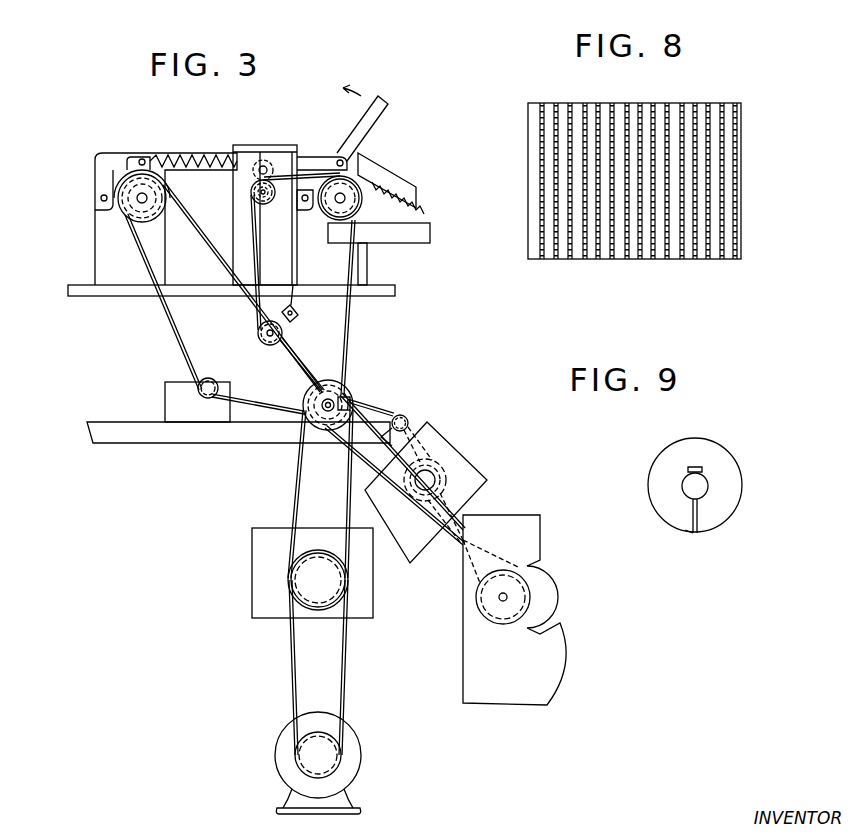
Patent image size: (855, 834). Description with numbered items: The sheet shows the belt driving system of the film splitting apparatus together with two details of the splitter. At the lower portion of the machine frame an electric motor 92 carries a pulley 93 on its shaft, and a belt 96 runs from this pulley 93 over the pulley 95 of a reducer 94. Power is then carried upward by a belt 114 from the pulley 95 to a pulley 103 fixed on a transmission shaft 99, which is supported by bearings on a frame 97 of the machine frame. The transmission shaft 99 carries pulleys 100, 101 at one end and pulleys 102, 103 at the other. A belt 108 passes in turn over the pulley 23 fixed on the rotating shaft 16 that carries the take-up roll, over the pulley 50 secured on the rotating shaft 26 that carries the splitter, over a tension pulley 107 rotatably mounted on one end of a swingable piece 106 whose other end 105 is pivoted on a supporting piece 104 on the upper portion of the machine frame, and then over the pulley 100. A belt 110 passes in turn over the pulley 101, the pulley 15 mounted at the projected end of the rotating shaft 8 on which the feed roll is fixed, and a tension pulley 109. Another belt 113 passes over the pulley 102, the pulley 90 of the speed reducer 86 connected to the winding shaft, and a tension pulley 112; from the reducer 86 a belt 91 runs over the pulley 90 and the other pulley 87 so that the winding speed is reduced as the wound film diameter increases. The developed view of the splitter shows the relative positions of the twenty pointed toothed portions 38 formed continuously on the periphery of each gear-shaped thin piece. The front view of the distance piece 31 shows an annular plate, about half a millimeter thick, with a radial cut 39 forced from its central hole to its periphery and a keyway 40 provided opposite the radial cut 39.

In FIG. 3, the rotating shaft 8 is at (138, 196).
In FIG. 3, the pulley 15 is at (122, 215).
In FIG. 3, the rotating shaft 16 is at (387, 180).
In FIG. 3, the pulley 23 is at (363, 228).
In FIG. 3, the rotating shaft 26 is at (258, 183).
In FIG. 3, the pulley 50 is at (252, 197).
In FIG. 3, the transmission shaft 99 is at (333, 398).
In FIG. 3, the pulley 100 is at (352, 383).
In FIG. 3, the pulley 101 is at (302, 390).
In FIG. 3, the pulley 102 is at (350, 373).
In FIG. 3, the pulley 103 is at (285, 427).
In FIG. 3, the supporting piece 104 is at (296, 310).
In FIG. 3, the other end of swingable piece 105 is at (297, 323).
In FIG. 3, the swingable piece 106 is at (282, 337).
In FIG. 3, the tension pulley 107 is at (257, 330).
In FIG. 3, the belt 108 is at (367, 305).
In FIG. 3, the tension pulley 109 is at (197, 395).
In FIG. 3, the belt 110 is at (170, 335).
In FIG. 3, the tension pulley 112 is at (405, 414).
In FIG. 3, the belt 113 is at (408, 412).
In FIG. 3, the belt 114 is at (294, 482).
In FIG. 3, the frame 97 is at (143, 445).
In FIG. 3, the reducer 94 is at (258, 578).
In FIG. 3, the pulley 95 is at (298, 606).
In FIG. 3, the belt 96 is at (347, 647).
In FIG. 3, the electric motor 92 is at (352, 731).
In FIG. 3, the pulley 93 is at (298, 757).
In FIG. 3, the speed reducer 86 is at (452, 447).
In FIG. 3, the pulley 90 is at (460, 462).
In FIG. 3, the belt 91 is at (467, 512).
In FIG. 3, the pulley 87 is at (523, 567).
In FIG. 8, the toothed portions 38 is at (542, 143).
In FIG. 9, the distance piece 31 is at (653, 461).
In FIG. 9, the radial cut 39 is at (688, 533).
In FIG. 9, the keyway 40 is at (698, 467).